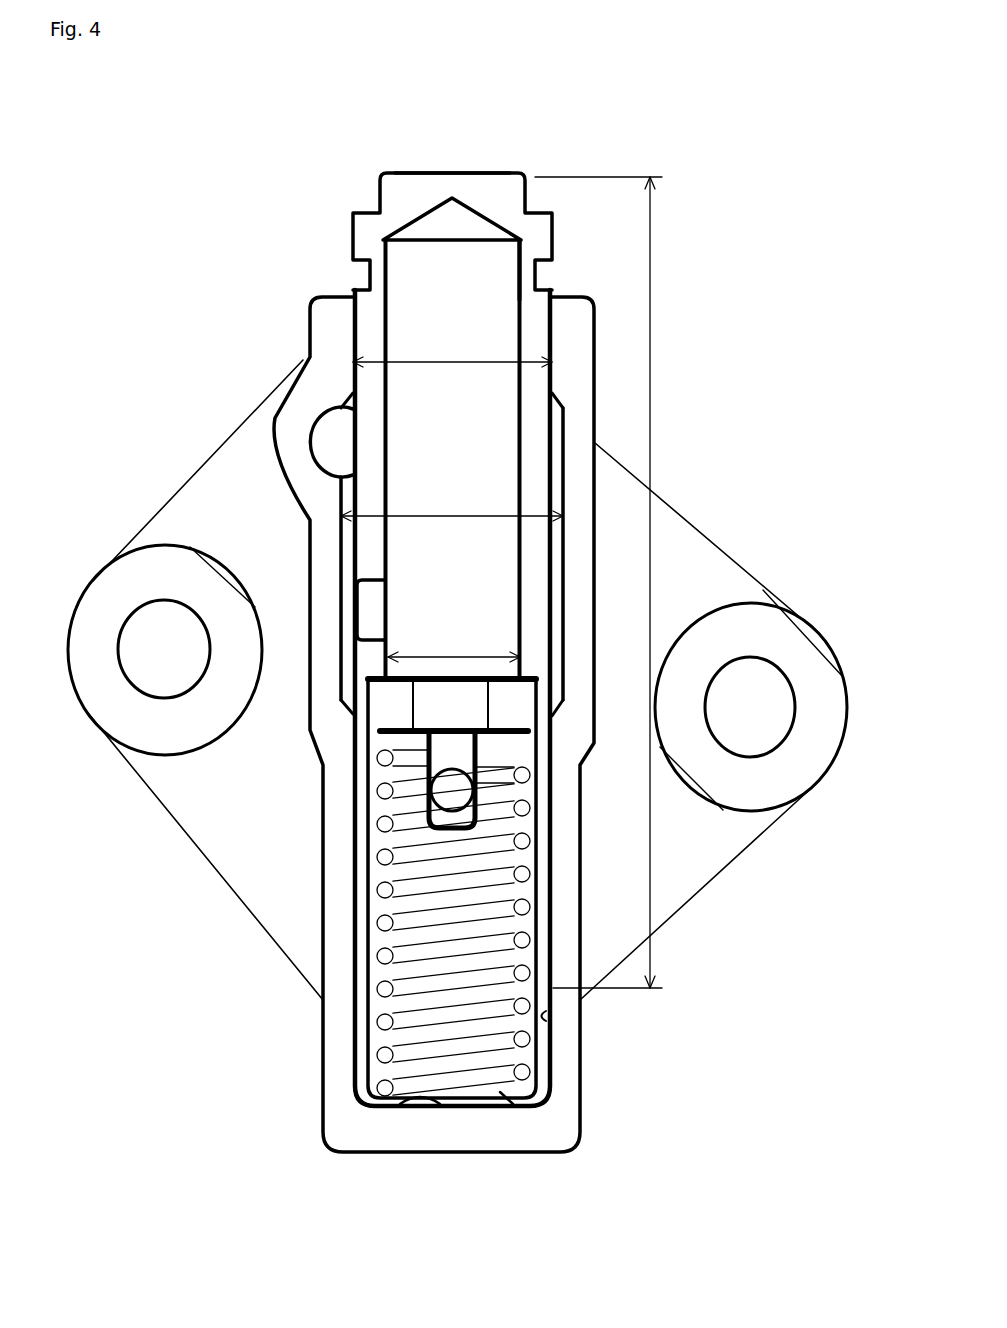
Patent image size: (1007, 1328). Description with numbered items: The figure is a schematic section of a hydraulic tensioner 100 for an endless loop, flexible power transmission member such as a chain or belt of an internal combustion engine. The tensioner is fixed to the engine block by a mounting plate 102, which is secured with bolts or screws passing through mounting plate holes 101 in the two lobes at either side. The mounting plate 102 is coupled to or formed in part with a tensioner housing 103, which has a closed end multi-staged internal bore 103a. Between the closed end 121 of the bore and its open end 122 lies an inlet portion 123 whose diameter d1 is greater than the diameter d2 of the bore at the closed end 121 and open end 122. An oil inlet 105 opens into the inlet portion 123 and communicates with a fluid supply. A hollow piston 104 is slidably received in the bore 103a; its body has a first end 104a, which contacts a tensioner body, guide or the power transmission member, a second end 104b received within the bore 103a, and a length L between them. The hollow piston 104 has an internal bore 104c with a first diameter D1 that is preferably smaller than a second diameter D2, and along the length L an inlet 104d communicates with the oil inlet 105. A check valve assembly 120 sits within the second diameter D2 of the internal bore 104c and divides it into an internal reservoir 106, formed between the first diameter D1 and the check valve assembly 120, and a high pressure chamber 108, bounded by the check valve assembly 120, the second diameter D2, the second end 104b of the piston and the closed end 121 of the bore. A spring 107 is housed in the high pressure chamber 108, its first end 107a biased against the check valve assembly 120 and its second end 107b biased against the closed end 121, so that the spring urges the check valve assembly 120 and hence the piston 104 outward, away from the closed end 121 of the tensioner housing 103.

The hydraulic tensioner 100 is at (175, 215).
The mounting plate holes 101 is at (158, 625).
The mounting plate 102 is at (153, 790).
The tensioner housing 103 is at (582, 1104).
The internal bore 103a is at (548, 1018).
The hollow piston 104 is at (375, 205).
The first end 104a is at (470, 168).
The second end 104b is at (360, 995).
The internal bore 104c is at (518, 279).
The inlet 104d is at (375, 610).
The oil inlet 105 is at (342, 445).
The internal reservoir 106 is at (470, 304).
The spring 107 is at (410, 873).
The first end 107a is at (400, 753).
The second end 107b is at (508, 1105).
The high pressure chamber 108 is at (388, 1088).
The check valve assembly 120 is at (395, 777).
The closed end 121 is at (408, 1106).
The open end 122 is at (362, 312).
The inlet portion 123 is at (563, 428).
The diameter d1 is at (456, 516).
The diameter d2 is at (452, 362).
The first diameter D1 is at (440, 657).
The second diameter D2 is at (495, 942).
The length L is at (598, 582).